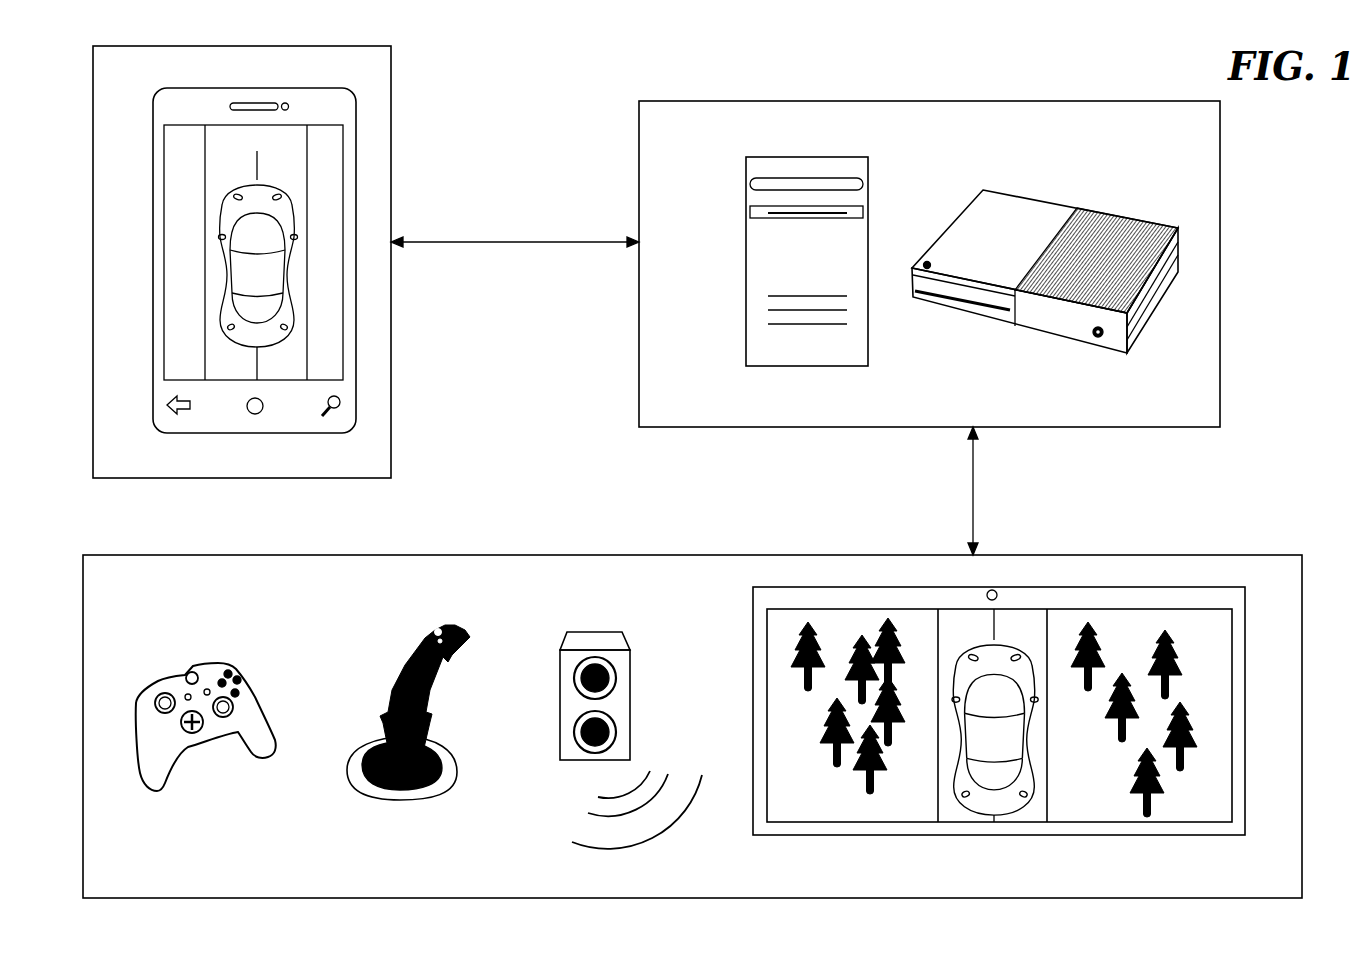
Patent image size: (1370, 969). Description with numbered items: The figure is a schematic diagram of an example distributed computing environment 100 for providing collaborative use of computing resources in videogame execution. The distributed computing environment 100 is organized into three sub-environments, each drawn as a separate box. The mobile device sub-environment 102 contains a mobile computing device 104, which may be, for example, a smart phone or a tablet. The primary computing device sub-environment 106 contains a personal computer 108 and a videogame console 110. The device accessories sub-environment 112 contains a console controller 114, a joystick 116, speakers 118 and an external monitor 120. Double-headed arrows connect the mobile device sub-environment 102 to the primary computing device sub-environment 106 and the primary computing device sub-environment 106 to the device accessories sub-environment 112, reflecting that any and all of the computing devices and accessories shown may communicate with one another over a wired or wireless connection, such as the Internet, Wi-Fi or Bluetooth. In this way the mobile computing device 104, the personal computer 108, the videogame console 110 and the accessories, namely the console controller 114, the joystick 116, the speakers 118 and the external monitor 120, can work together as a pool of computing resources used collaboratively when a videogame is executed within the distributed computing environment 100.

The distributed computing environment 100 is at (1294, 293).
The mobile device sub-environment 102 is at (372, 470).
The mobile computing device 104 is at (157, 97).
The primary computing device sub-environment 106 is at (1206, 420).
The personal computer 108 is at (746, 157).
The videogame console 110 is at (983, 190).
The device accessories sub-environment 112 is at (1283, 892).
The console controller 114 is at (218, 663).
The joystick 116 is at (408, 670).
The speakers 118 is at (593, 631).
The external monitor 120 is at (752, 668).